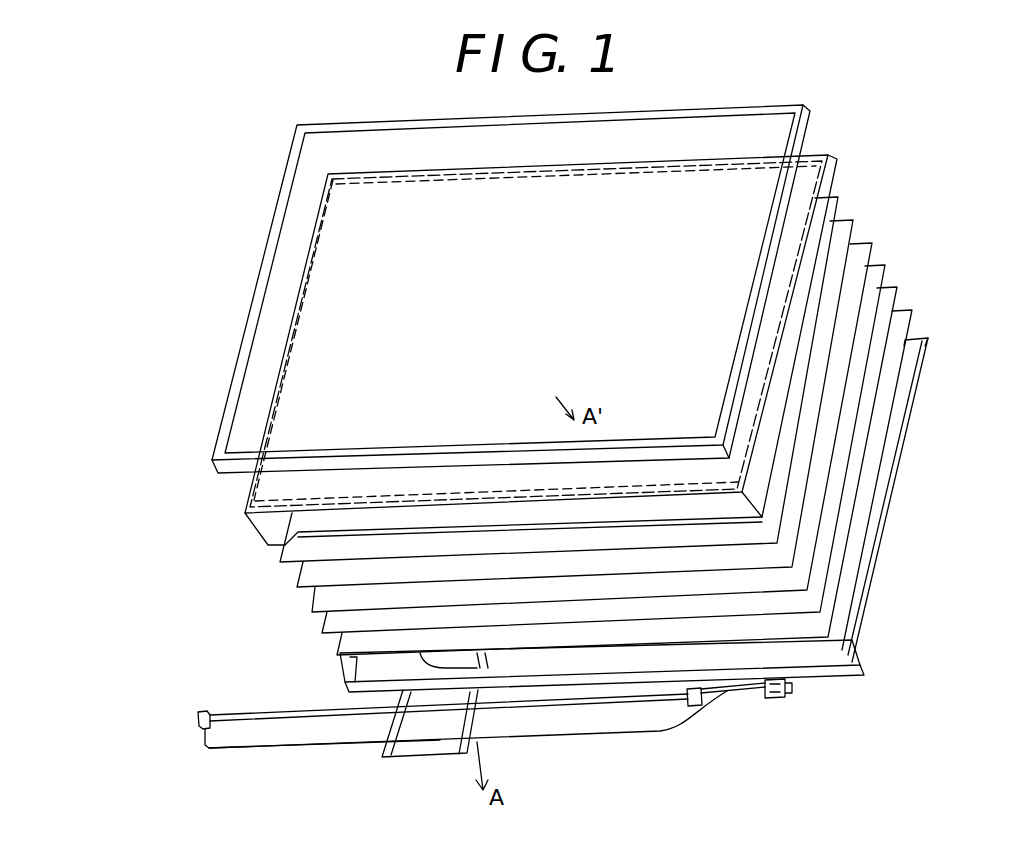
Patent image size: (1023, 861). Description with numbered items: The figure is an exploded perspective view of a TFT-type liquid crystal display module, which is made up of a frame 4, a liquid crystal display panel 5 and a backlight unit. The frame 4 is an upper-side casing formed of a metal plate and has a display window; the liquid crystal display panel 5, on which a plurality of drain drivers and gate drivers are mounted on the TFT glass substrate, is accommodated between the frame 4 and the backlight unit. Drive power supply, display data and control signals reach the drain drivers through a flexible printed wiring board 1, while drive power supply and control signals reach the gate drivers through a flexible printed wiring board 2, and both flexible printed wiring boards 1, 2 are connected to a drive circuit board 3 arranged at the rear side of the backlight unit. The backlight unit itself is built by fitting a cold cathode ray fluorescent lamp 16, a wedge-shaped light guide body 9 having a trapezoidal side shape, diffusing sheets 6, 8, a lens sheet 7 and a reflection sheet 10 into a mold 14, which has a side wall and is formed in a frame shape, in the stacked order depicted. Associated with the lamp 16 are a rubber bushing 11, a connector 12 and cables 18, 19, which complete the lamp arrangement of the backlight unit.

The flexible printed wiring board 1 is at (257, 532).
The flexible printed wiring board 2 is at (245, 488).
The drive circuit board 3 is at (397, 700).
The frame 4 is at (235, 356).
The liquid crystal display panel 5 is at (312, 397).
The diffusing sheet 6 is at (840, 205).
The lens sheet 7 is at (876, 252).
The diffusing sheet 8 is at (887, 277).
The light guide body 9 is at (897, 300).
The reflection sheet 10 is at (910, 323).
The rubber bushing 11 is at (708, 706).
The connector 12 is at (792, 690).
The mold 14 is at (925, 380).
The cold cathode ray fluorescent lamp 16 is at (633, 705).
The cable 18 is at (727, 689).
The cable 19 is at (570, 733).